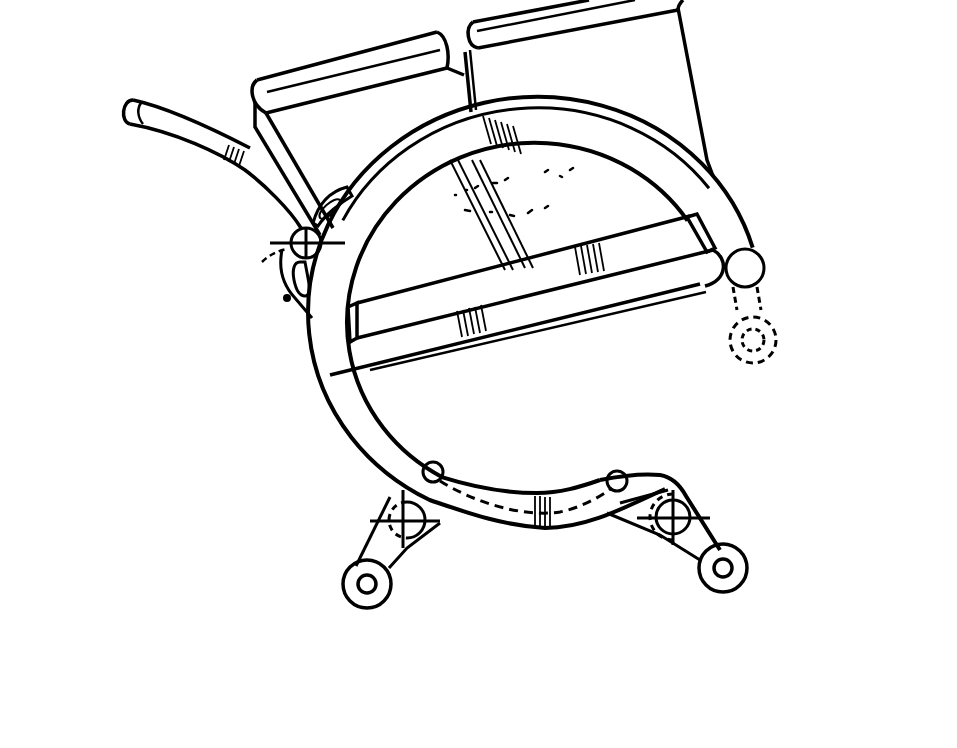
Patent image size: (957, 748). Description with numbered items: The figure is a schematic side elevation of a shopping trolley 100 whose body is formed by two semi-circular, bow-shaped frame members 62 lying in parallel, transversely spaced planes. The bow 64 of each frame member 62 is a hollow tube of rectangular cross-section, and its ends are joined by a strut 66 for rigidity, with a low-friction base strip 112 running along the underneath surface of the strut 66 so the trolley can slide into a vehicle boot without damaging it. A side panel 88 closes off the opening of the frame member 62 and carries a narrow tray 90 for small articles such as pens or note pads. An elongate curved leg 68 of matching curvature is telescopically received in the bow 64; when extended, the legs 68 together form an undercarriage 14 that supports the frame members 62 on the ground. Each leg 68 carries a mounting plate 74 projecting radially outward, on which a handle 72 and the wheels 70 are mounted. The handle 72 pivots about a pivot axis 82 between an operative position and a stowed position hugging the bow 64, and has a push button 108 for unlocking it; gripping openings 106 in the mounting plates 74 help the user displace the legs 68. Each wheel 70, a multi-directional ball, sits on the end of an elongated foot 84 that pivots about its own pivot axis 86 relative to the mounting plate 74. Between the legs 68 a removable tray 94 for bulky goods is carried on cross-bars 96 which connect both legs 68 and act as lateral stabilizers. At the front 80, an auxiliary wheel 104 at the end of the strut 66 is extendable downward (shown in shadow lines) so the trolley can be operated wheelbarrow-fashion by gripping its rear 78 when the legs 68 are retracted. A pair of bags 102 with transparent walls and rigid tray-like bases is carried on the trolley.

The undercarriage 14 is at (491, 565).
The shopping trolley 100 is at (759, 60).
The bag 102 is at (353, 113).
The handle 72 is at (142, 125).
The push button 108 is at (257, 128).
The rear 78 is at (289, 372).
The frame member 62 is at (547, 312).
The bow 64 is at (547, 312).
The leg 68 is at (668, 160).
The side panel 88 is at (604, 217).
The front 80 is at (790, 200).
The tray 90 is at (405, 319).
The strut 66 is at (593, 294).
The base strip 112 is at (547, 322).
The pivot axis 82 is at (262, 261).
The mounting plate 74 is at (284, 274).
The gripping opening 106 is at (287, 298).
The auxiliary wheel 104 is at (752, 266).
The tray 94 is at (512, 512).
The cross-bar 96 is at (439, 462).
The pivot axis 86 is at (378, 493).
The foot 84 is at (383, 548).
The wheel 70 is at (348, 582).